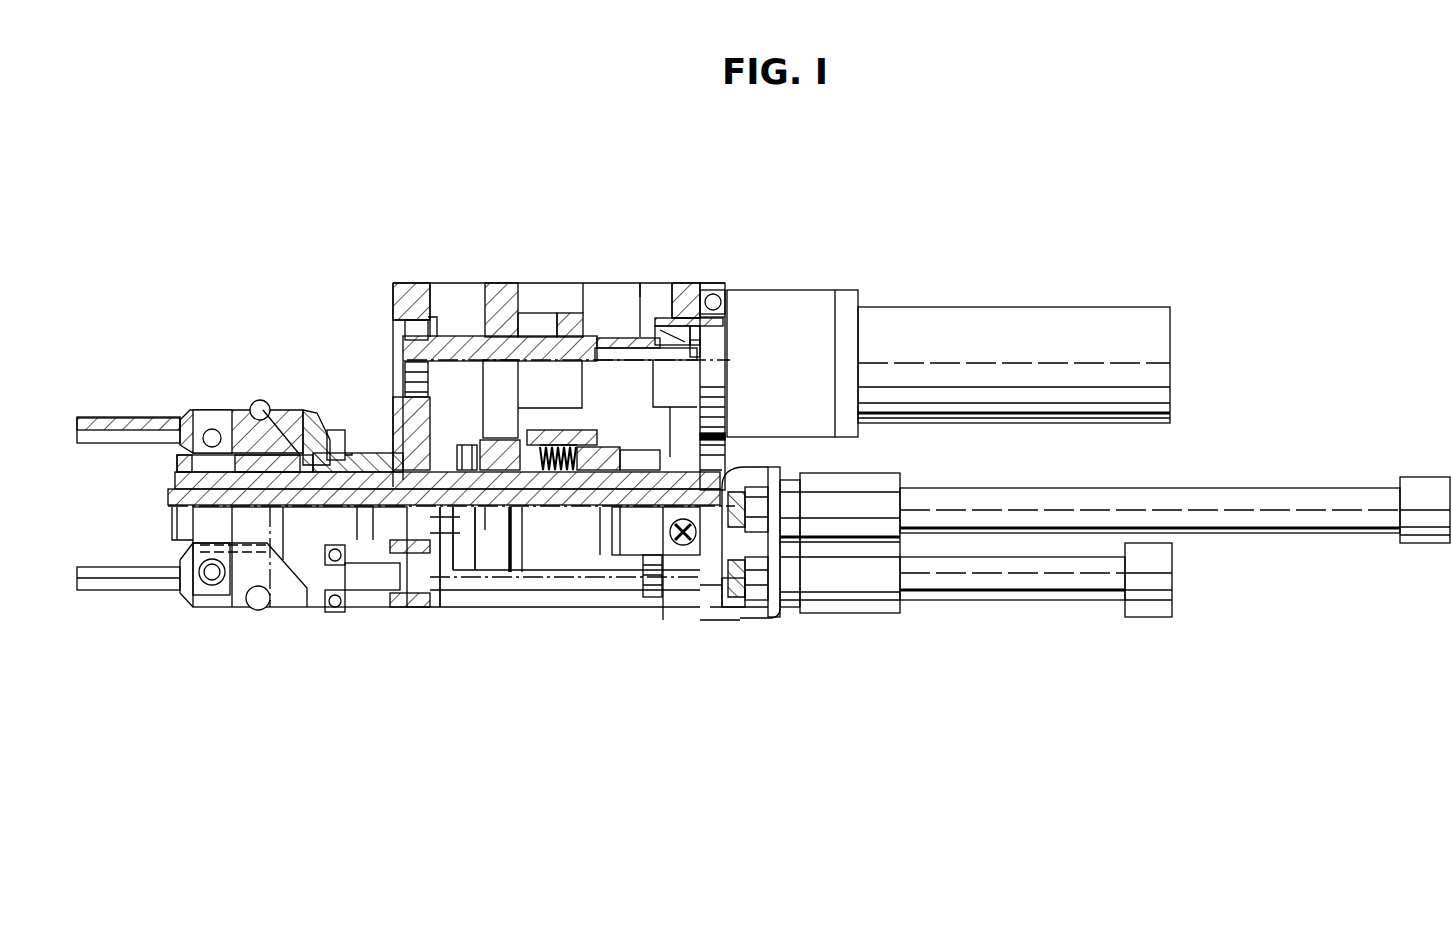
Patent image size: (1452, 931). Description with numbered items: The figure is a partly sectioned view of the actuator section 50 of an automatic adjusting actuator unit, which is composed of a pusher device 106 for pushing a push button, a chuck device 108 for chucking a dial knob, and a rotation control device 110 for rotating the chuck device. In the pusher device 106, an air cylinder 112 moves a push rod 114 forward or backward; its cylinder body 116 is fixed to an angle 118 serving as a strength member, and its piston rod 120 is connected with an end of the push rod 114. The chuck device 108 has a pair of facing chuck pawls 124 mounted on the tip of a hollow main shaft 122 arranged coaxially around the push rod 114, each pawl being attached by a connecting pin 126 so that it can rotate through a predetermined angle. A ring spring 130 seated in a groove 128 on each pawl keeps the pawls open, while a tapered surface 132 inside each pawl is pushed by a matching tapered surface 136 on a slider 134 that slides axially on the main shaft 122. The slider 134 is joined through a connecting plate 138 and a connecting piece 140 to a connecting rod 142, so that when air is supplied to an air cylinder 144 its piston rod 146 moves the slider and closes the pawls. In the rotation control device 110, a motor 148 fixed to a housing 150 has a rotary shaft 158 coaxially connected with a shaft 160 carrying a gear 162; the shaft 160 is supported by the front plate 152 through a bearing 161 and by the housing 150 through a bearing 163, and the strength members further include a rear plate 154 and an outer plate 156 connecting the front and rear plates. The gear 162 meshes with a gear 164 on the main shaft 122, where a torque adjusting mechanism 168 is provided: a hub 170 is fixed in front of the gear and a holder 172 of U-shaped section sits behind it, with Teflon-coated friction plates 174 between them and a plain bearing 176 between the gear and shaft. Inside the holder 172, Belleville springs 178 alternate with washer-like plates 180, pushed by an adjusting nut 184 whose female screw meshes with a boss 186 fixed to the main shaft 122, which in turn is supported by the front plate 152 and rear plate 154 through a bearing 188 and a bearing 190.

The actuator section 50 is at (457, 222).
The pusher device 106 is at (835, 458).
The chuck device 108 is at (135, 615).
The rotation control device 110 is at (560, 262).
The air cylinder 112 is at (1240, 535).
The push rod 114 is at (600, 505).
The cylinder body 116 is at (1325, 525).
The angle 118 is at (772, 622).
The piston rod 120 is at (732, 472).
The main shaft 122 is at (372, 470).
The chuck pawls 124 is at (115, 430).
The connecting pin 126 is at (212, 430).
The groove 128 is at (262, 400).
The ring spring 130 is at (255, 400).
The tapered surface 132 is at (325, 447).
The slider 134 is at (298, 435).
The tapered surface 136 is at (300, 405).
The connecting plate 138 is at (330, 600).
The connecting piece 140 is at (300, 597).
The connecting rod 142 is at (398, 607).
The air cylinder 144 is at (1018, 598).
The piston rod 146 is at (712, 590).
The motor 148 is at (985, 315).
The housing 150 is at (725, 290).
The front plate 152 is at (402, 283).
The rear plate 154 is at (675, 285).
The outer plate 156 is at (640, 283).
The rotary shaft 158 is at (700, 356).
The shaft 160 is at (592, 310).
The bearing 161 is at (420, 292).
The gear 162 is at (495, 290).
The bearing 163 is at (668, 320).
The gear 164 is at (487, 510).
The torque adjusting mechanism 168 is at (638, 422).
The hub 170 is at (448, 580).
The holder 172 is at (530, 445).
The friction plates 174 is at (490, 470).
The plain bearing 176 is at (500, 510).
The Belleville springs 178 is at (545, 505).
The washer-like plates 180 is at (560, 505).
The adjusting nut 184 is at (705, 395).
The boss 186 is at (636, 490).
The bearing 188 is at (370, 590).
The bearing 190 is at (712, 437).